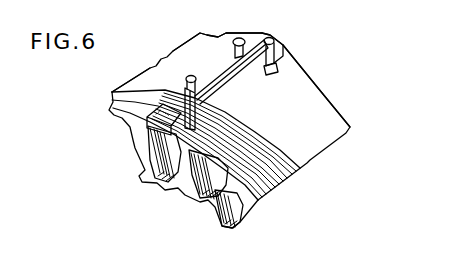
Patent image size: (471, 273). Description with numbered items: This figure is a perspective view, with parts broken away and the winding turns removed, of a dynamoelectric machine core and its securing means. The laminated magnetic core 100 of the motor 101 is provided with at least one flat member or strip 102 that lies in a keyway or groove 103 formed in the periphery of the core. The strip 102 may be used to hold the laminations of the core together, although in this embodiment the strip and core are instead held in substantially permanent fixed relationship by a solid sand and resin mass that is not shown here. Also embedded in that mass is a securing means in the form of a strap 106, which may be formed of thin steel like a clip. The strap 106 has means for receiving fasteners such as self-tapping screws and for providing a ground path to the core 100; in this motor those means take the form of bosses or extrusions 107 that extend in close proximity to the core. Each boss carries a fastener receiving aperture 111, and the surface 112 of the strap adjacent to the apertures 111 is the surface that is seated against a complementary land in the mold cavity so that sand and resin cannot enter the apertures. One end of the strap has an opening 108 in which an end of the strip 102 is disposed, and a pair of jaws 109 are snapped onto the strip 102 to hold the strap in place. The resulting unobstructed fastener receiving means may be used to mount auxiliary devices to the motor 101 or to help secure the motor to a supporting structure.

The laminated magnetic core 100 is at (333, 107).
The motor 101 is at (324, 89).
The flat member or strip 102 is at (280, 44).
The keyway or groove 103 is at (228, 84).
The strap 106 is at (245, 39).
The bosses or extrusions 107 is at (167, 82).
The opening 108 is at (269, 70).
The pair of jaws 109 is at (143, 121).
The fastener receiving apertures 111 is at (190, 75).
The surface of the strap 112 is at (222, 48).